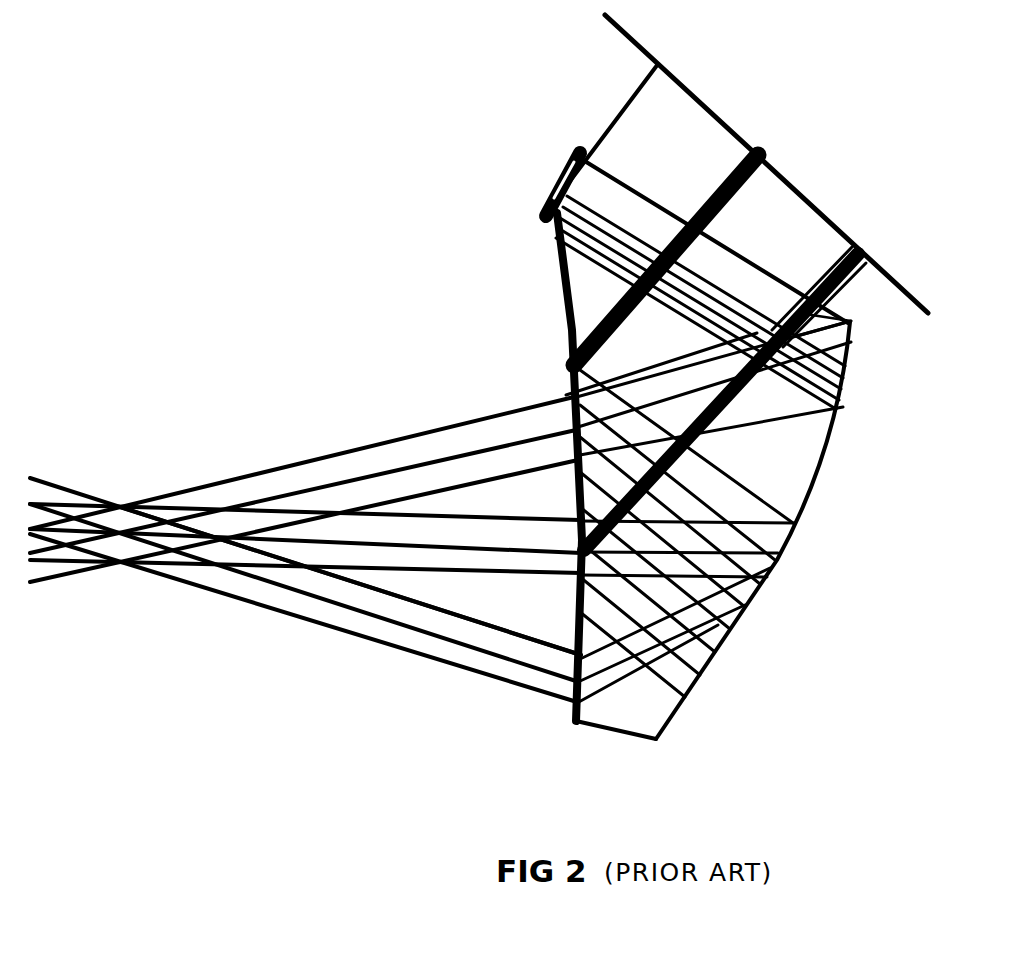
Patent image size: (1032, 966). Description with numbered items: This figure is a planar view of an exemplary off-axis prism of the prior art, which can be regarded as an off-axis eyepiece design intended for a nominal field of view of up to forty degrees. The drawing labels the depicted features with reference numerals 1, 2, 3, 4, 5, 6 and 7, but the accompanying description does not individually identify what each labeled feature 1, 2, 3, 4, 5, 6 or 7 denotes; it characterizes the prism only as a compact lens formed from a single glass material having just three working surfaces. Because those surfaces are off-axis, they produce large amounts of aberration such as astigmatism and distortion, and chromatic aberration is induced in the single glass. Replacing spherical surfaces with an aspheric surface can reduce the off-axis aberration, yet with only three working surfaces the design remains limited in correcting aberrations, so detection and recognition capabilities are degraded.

The light source / object 1 is at (122, 507).
The light rays 2 is at (425, 545).
The planar surface 3 is at (578, 655).
The lens 4 is at (742, 627).
The aperture element 5 is at (616, 174).
The plate element 6 is at (747, 140).
The curved surface 7 is at (800, 479).